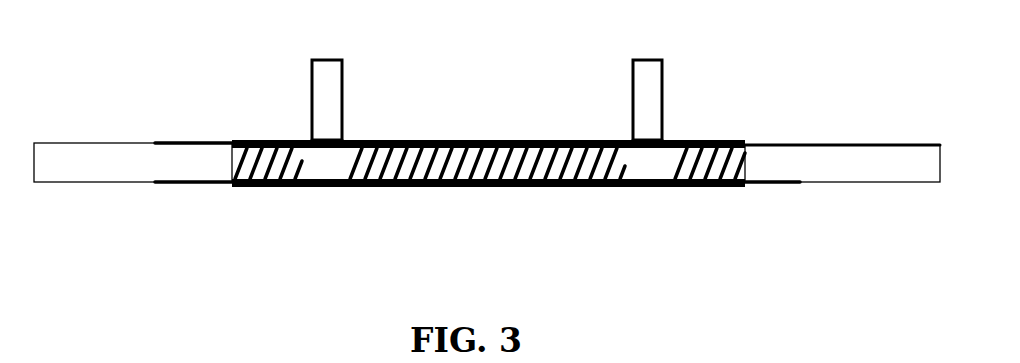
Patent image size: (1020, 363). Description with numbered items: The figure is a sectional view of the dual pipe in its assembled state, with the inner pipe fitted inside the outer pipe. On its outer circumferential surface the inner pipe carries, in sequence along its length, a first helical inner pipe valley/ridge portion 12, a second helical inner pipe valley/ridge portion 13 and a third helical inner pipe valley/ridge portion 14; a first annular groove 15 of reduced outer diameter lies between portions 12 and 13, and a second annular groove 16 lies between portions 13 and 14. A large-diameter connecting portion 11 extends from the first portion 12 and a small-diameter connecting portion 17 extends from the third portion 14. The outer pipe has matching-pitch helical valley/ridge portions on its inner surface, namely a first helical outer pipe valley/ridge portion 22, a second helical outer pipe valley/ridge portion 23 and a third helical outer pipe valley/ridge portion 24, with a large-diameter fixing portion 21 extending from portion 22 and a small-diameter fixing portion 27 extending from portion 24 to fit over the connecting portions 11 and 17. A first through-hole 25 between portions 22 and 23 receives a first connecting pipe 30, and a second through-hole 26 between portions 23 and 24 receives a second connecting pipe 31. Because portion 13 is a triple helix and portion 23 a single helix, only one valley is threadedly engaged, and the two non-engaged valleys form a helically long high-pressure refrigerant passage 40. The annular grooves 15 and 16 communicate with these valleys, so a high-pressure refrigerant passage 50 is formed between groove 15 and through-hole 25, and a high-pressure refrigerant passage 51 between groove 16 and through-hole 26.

The large-diameter connecting portion 11 is at (93, 167).
The first helical inner pipe valley/ridge portion 12 is at (240, 187).
The second helical inner pipe valley/ridge portion 13 is at (420, 187).
The third helical inner pipe valley/ridge portion 14 is at (697, 187).
The first annular groove 15 is at (290, 187).
The second annular groove 16 is at (615, 187).
The small-diameter connecting portion 17 is at (830, 183).
The large-diameter fixing portion 21 is at (193, 140).
The first helical outer pipe valley/ridge portion 22 is at (245, 140).
The second helical outer pipe valley/ridge portion 23 is at (427, 140).
The third helical outer pipe valley/ridge portion 24 is at (710, 140).
The first through-hole 25 is at (332, 136).
The second through-hole 26 is at (650, 130).
The small-diameter fixing portion 27 is at (773, 140).
The first connecting pipe 30 is at (342, 65).
The second connecting pipe 31 is at (664, 65).
The high-pressure refrigerant passage 40 is at (478, 140).
The high-pressure refrigerant passage 50 is at (340, 187).
The high-pressure refrigerant passage 51 is at (660, 187).